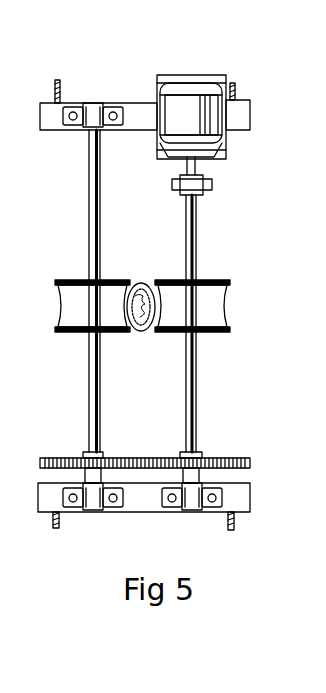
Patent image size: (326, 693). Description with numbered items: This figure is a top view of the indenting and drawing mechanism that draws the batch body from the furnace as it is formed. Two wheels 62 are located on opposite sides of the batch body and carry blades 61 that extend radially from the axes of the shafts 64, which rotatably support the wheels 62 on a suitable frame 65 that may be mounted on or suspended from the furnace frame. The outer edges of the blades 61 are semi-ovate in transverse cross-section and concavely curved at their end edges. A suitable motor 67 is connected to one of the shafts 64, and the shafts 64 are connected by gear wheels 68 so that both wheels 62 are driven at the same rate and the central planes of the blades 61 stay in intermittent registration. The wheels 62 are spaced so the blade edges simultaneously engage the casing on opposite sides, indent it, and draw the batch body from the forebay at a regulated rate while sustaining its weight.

The blades 61 is at (63, 297).
The wheels 62 is at (63, 327).
The shafts 64 is at (92, 230).
The frame 65 is at (140, 115).
The motor 67 is at (190, 120).
The gear wheels 68 is at (165, 458).